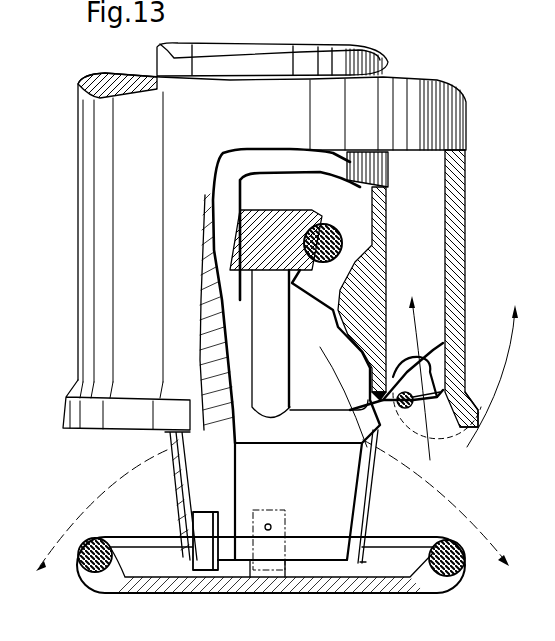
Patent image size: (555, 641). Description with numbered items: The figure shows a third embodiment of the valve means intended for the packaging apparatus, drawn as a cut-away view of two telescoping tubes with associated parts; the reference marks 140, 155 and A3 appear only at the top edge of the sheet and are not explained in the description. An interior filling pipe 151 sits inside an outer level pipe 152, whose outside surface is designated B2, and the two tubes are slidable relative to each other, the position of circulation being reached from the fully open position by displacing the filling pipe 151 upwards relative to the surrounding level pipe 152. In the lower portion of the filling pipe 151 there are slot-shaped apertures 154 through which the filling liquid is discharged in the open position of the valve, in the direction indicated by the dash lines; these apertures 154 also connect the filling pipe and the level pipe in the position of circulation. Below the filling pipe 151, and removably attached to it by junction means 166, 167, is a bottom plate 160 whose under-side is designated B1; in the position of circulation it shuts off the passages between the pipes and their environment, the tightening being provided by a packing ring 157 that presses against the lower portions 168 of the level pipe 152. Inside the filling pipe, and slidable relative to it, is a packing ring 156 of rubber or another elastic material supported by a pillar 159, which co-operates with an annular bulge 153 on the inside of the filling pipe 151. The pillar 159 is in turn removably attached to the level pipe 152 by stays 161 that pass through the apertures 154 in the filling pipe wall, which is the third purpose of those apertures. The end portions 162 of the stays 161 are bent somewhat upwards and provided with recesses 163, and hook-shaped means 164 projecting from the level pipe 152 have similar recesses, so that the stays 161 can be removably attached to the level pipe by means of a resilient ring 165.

The closure member 140 is at (300, 0).
The axis 155 is at (226, 6).
The direction of movement A3 is at (270, 0).
The filling pipe 151 is at (340, 60).
The level pipe 152 is at (427, 98).
The annular bulge 153 is at (388, 265).
The slot-shaped apertures 154 is at (366, 502).
The packing ring 156 is at (343, 225).
The packing ring 157 is at (464, 564).
The pillar 159 is at (270, 390).
The bottom plate 160 is at (353, 587).
The stays 161 is at (302, 432).
The end portions 162 is at (412, 409).
The recesses 163 is at (422, 410).
The hook-shaped means 164 is at (438, 347).
The resilient ring 165 is at (438, 396).
The junction means 166 is at (274, 570).
The junction means 167 is at (271, 525).
The lower portions 168 is at (468, 422).
The under-side of the bottom plate B1 is at (372, 600).
The outside surface B2 is at (466, 276).